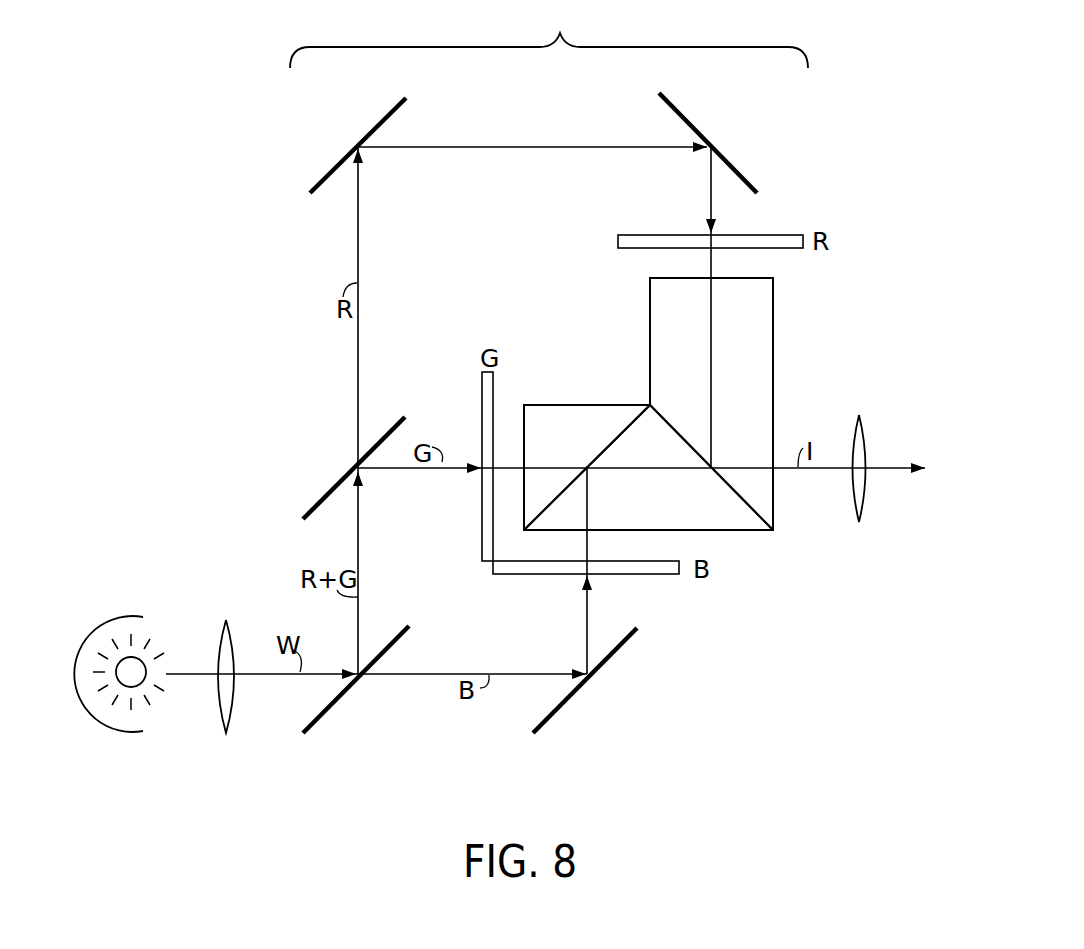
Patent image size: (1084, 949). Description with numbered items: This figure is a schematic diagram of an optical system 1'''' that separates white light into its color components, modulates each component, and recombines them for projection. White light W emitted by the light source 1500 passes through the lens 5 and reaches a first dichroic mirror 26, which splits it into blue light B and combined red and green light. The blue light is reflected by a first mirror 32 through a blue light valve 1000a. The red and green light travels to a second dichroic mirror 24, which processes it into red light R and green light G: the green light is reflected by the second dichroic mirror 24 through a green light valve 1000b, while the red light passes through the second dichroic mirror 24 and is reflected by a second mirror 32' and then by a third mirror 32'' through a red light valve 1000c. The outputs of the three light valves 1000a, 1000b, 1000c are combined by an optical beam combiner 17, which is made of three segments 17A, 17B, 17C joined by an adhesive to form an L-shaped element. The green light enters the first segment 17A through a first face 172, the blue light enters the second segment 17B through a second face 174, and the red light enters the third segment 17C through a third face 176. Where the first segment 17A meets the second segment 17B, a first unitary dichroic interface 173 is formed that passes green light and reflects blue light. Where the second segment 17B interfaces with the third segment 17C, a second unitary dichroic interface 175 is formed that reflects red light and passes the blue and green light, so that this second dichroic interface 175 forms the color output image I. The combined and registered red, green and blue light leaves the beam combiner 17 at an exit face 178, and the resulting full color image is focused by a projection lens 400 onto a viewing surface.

The optical system 1'''' is at (549, 35).
The second mirror 32' is at (334, 145).
The third mirror 32'' is at (725, 143).
The second dichroic mirror 24 is at (328, 490).
The first dichroic mirror 26 is at (330, 703).
The first mirror 32 is at (585, 695).
The red light valve 1000c is at (775, 233).
The green light valve 1000b is at (478, 378).
The blue light valve 1000a is at (655, 575).
The optical beam combiner 17 is at (683, 427).
The first segment 17A is at (574, 460).
The second segment 17B is at (674, 518).
The third segment 17C is at (698, 352).
The first face 172 is at (525, 428).
The first unitary dichroic interface 173 is at (625, 430).
The second face 174 is at (737, 532).
The second unitary dichroic interface 175 is at (757, 507).
The third face 176 is at (752, 279).
The exit face 178 is at (773, 411).
The projection lens 400 is at (860, 505).
The lens 5 is at (225, 715).
The light source 1500 is at (124, 745).